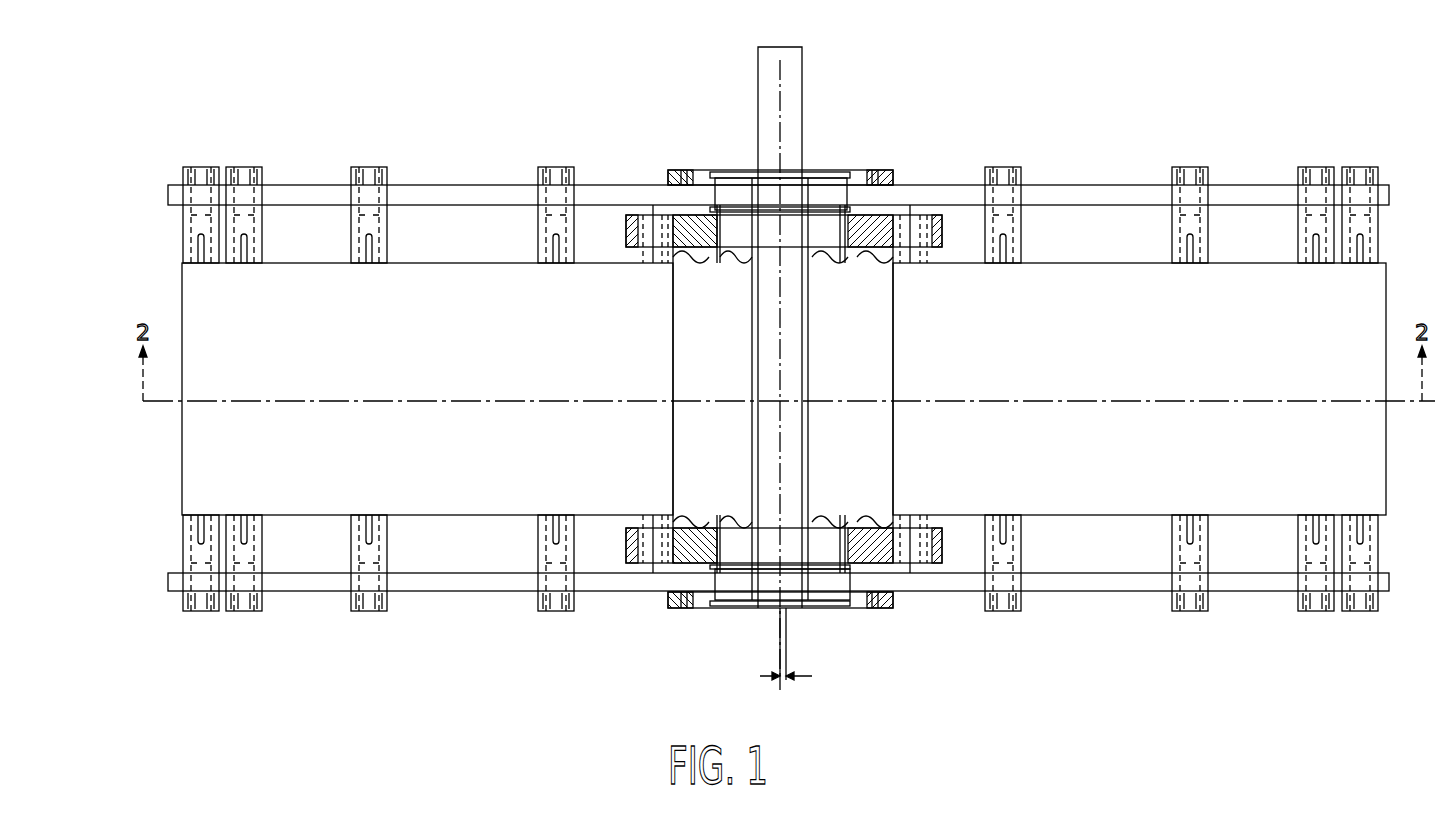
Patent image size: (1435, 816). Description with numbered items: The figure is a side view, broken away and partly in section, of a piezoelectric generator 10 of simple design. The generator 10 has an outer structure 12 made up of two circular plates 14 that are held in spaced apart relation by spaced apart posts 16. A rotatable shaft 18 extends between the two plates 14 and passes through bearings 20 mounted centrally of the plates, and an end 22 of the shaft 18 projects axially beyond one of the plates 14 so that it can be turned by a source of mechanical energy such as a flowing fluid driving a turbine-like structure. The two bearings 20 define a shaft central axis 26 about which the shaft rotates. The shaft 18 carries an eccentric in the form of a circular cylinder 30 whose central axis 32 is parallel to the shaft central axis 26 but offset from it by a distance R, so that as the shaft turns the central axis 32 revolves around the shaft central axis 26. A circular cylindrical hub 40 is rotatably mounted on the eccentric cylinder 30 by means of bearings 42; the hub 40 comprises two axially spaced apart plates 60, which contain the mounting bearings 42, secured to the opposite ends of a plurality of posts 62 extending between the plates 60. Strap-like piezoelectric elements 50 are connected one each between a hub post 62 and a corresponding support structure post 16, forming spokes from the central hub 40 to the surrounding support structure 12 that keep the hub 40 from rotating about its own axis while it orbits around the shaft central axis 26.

The generator 10 is at (1090, 180).
The outer structure 12 is at (427, 185).
The circular plates 14 is at (511, 188).
The posts 16 is at (182, 241).
The rotatable shaft 18 is at (768, 176).
The bearings 20 is at (832, 195).
The end of the shaft 22 is at (786, 82).
The shaft central axis 26 is at (780, 655).
The circular cylinder 30 is at (808, 360).
The central axis 32 is at (786, 656).
The cylindrical hub 40 is at (977, 233).
The bearings 42 is at (727, 225).
The piezoelectric elements 50 is at (464, 268).
The plates 60 is at (890, 215).
The posts 62 is at (632, 250).